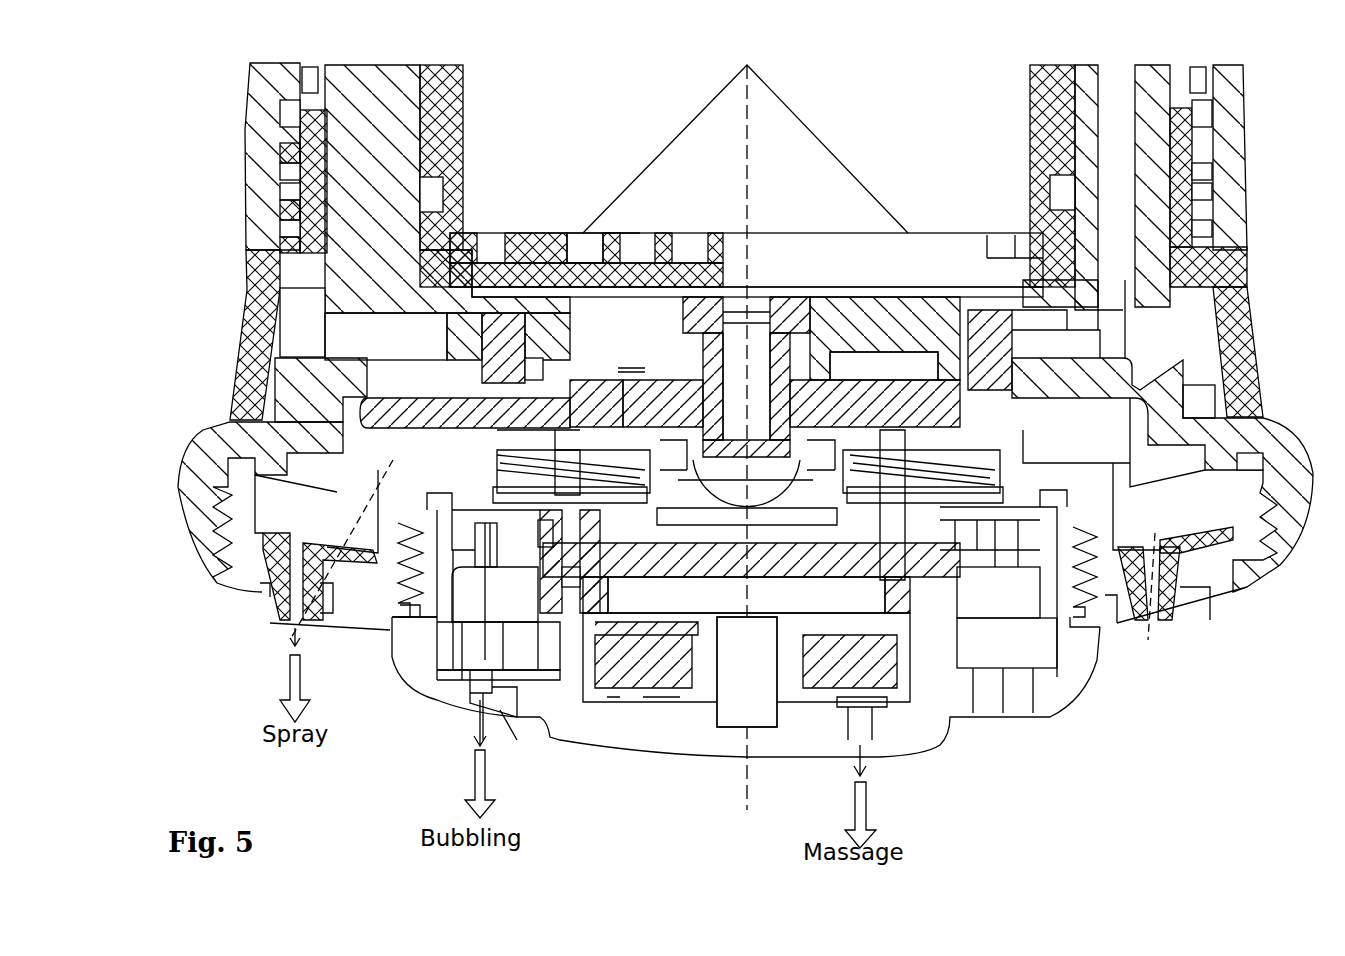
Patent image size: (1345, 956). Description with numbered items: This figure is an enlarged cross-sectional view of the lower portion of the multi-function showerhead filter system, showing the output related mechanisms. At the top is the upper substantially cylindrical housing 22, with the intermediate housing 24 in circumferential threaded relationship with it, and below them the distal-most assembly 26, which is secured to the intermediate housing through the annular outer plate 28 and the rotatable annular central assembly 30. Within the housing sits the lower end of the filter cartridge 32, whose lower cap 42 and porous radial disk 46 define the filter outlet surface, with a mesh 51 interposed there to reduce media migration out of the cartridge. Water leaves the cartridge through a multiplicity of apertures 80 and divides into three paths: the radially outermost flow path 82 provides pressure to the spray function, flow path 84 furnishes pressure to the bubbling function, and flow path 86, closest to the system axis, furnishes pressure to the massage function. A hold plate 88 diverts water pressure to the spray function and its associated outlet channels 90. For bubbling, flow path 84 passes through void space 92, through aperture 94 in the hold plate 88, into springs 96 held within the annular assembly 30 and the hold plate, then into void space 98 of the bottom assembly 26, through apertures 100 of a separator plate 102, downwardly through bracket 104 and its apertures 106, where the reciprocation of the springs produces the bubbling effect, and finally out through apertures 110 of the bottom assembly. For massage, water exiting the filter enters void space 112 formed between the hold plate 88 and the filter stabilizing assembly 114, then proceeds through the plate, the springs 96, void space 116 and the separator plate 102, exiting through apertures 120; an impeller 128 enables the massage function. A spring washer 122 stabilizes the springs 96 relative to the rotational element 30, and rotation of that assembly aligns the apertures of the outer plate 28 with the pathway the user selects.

The upper substantially cylindrical housing 22 is at (245, 130).
The intermediate housing 24 is at (247, 320).
The distal-most assembly 26 is at (1080, 670).
The annular outer plate 28 is at (1240, 587).
The rotatable annular central assembly 30 is at (188, 440).
The filter cartridge 32 is at (944, 101).
The lower cap 42 is at (947, 270).
The porous radial disk 46 is at (865, 235).
The mesh 51 is at (640, 245).
The apertures 80 is at (578, 245).
The radially outermost flow path 82 is at (270, 597).
The flow path 84 is at (492, 759).
The flow path 86 is at (905, 283).
The hold plate 88 is at (990, 397).
The outlet channels 90 is at (285, 625).
The void space 92 is at (642, 411).
The aperture 94 is at (557, 408).
The springs 96 is at (597, 470).
The void space 98 is at (493, 470).
The apertures 100 is at (450, 575).
The separator plate 102 is at (840, 690).
The bracket 104 is at (447, 660).
The apertures 106 is at (483, 700).
The apertures 110 is at (505, 712).
The void space 112 is at (855, 360).
The filter stabilizing assembly 114 is at (372, 92).
The void space 116 is at (772, 640).
The apertures 120 is at (877, 740).
The spring washer 122 is at (993, 465).
The impeller 128 is at (657, 690).